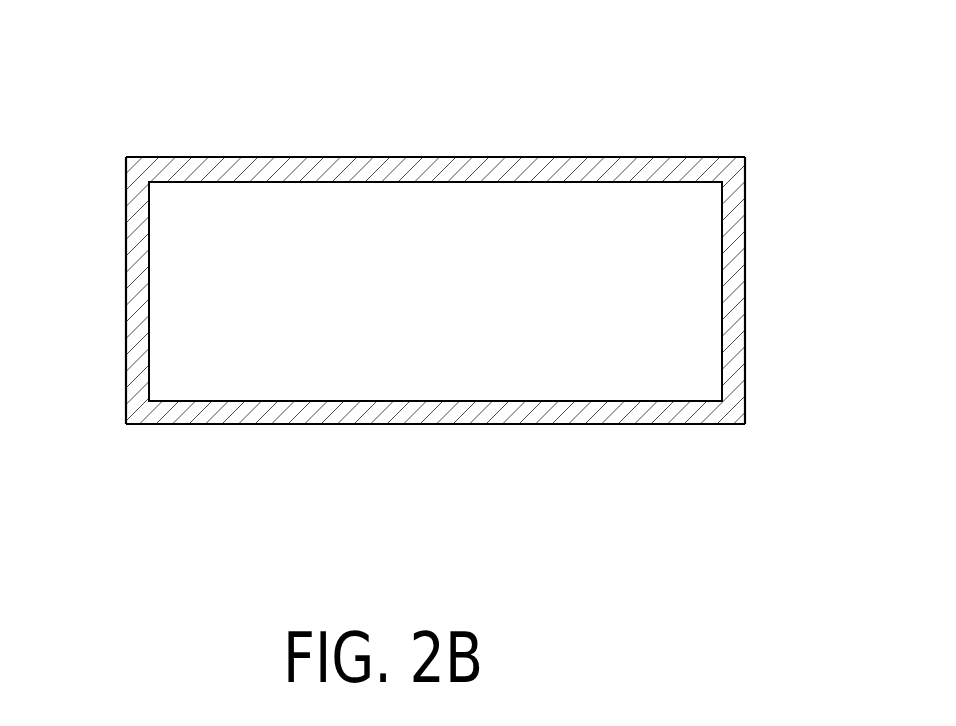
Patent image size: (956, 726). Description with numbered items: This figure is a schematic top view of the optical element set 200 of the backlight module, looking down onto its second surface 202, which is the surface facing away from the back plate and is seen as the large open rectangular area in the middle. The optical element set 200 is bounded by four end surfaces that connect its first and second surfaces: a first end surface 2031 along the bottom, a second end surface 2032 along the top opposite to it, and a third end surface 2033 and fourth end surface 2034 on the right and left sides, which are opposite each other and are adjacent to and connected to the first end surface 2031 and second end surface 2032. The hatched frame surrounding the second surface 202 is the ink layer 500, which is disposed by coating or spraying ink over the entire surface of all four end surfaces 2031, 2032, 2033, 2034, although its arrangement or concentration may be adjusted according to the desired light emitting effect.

The optical element set 200 is at (134, 56).
The second surface 202 is at (450, 212).
The ink layer 500 is at (387, 170).
The first end surface 2031 is at (277, 401).
The second end surface 2032 is at (277, 180).
The third end surface 2033 is at (722, 300).
The fourth end surface 2034 is at (148, 300).